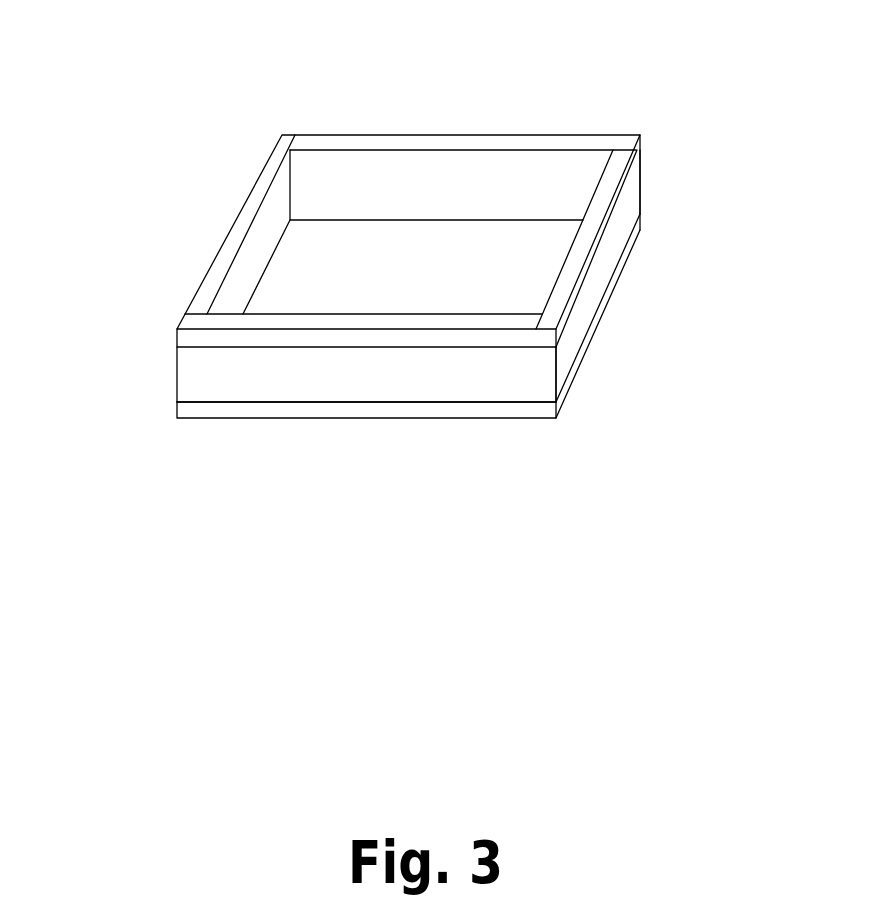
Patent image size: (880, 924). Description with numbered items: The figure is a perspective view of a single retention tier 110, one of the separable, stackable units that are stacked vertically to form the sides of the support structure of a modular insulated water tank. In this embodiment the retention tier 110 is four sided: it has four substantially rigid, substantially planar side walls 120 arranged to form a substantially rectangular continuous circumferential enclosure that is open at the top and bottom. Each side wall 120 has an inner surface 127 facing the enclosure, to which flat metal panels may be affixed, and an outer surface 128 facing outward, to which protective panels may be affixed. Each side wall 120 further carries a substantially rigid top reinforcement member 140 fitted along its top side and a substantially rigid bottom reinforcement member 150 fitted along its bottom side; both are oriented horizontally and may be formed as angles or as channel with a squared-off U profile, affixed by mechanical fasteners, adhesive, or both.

The retention tier 110 is at (406, 284).
The side wall 120 is at (177, 377).
The inner surface 127 is at (520, 187).
The outer surface 128 is at (590, 280).
The top reinforcement member 140 is at (415, 145).
The bottom reinforcement member 150 is at (460, 418).